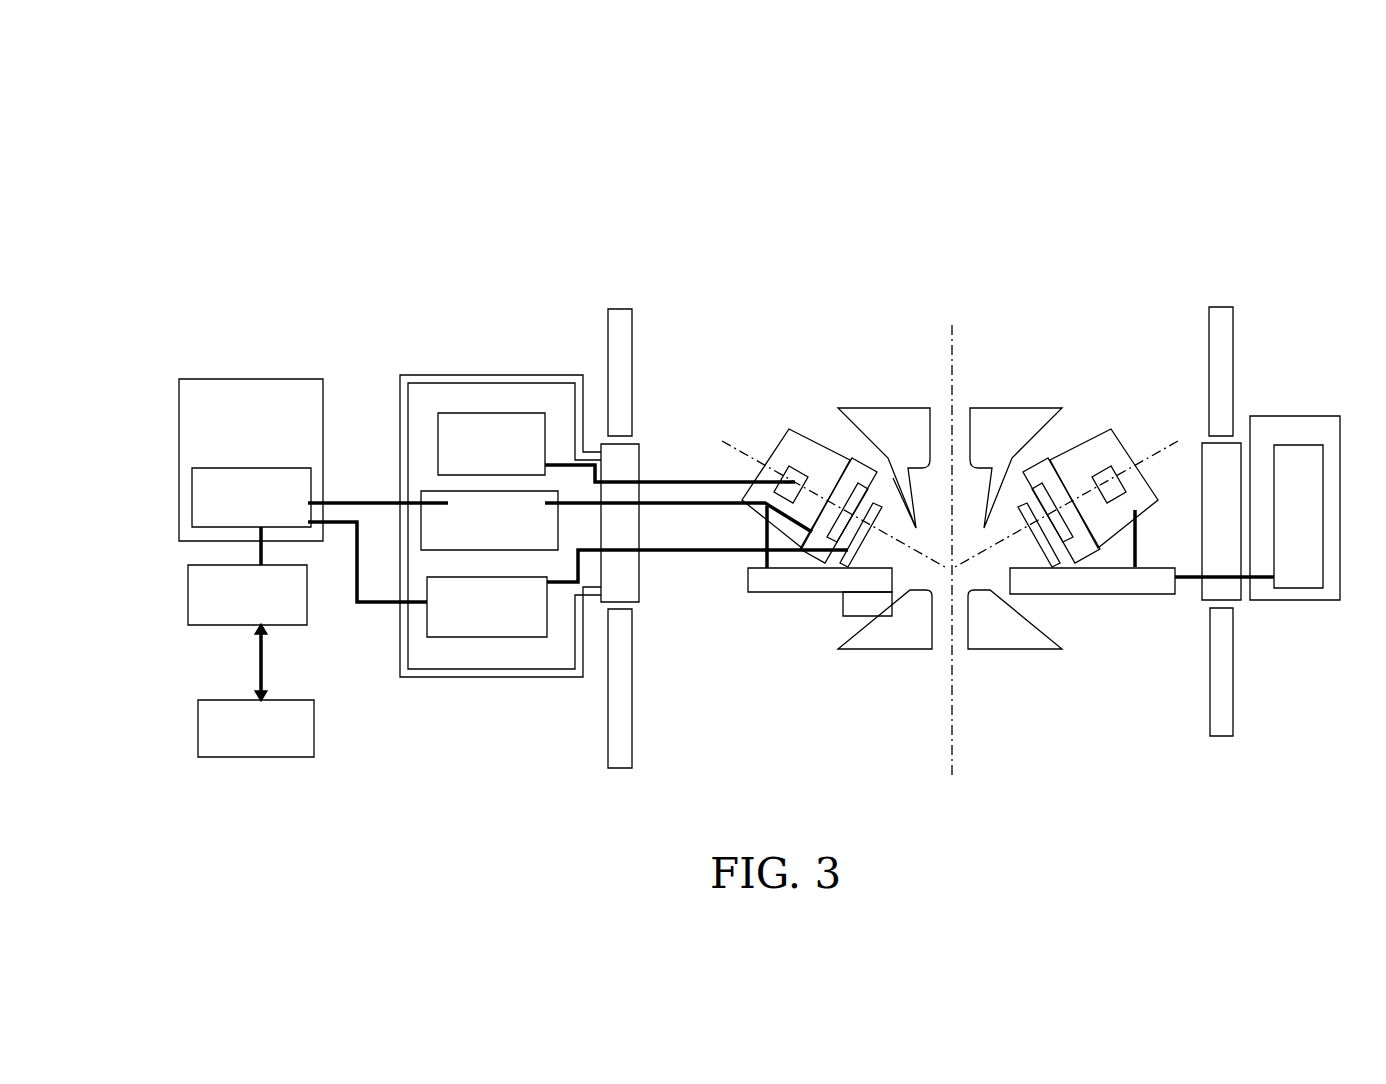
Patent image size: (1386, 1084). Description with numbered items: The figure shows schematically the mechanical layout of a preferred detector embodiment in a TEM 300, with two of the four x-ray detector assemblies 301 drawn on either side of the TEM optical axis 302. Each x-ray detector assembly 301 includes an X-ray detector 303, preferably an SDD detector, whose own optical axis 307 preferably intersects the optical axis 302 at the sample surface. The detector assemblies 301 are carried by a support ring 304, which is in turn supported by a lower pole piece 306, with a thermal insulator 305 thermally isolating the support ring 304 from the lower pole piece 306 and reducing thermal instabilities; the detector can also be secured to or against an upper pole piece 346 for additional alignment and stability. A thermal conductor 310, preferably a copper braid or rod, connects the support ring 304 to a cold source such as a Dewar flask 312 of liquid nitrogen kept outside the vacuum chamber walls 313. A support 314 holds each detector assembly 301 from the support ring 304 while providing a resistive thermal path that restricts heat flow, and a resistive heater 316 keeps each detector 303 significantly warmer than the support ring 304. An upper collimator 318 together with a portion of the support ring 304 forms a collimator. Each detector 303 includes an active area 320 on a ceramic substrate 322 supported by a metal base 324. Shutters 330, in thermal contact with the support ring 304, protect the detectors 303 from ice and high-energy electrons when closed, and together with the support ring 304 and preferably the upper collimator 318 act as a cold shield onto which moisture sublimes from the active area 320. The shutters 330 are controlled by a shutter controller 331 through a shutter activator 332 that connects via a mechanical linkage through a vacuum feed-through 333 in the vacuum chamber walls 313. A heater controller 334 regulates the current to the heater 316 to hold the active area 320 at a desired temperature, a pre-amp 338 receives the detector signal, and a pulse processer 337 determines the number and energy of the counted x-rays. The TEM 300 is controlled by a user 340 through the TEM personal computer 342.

The TEM 300 is at (1120, 186).
The x-ray detector assembly 301 is at (760, 427).
The TEM optical axis 302 is at (953, 358).
The X-ray detector 303 is at (840, 478).
The support ring 304 is at (765, 594).
The thermal insulator 305 is at (843, 604).
The lower pole piece 306 is at (890, 650).
The optical axis of detector assembly 307 is at (752, 458).
The thermal conductor 310 is at (1185, 598).
The Dewar flask 312 is at (1266, 600).
The vacuum chamber walls 313 is at (632, 325).
The support 314 is at (1141, 560).
The resistive heater 316 is at (1112, 466).
The upper collimator 318 is at (900, 406).
The active area 320 is at (1047, 500).
The ceramic substrate 322 is at (1055, 500).
The metal base 324 is at (1140, 475).
The shutter 330 is at (1043, 557).
The shutter controller 331 is at (192, 510).
The shutter activator 332 is at (437, 637).
The vacuum feed-through 333 is at (639, 571).
The heater controller 334 is at (510, 413).
The pulse processer 337 is at (285, 379).
The pre-amp 338 is at (430, 490).
The user 340 is at (198, 745).
The TEM Personal computer 342 is at (188, 600).
The upper pole piece 346 is at (893, 478).